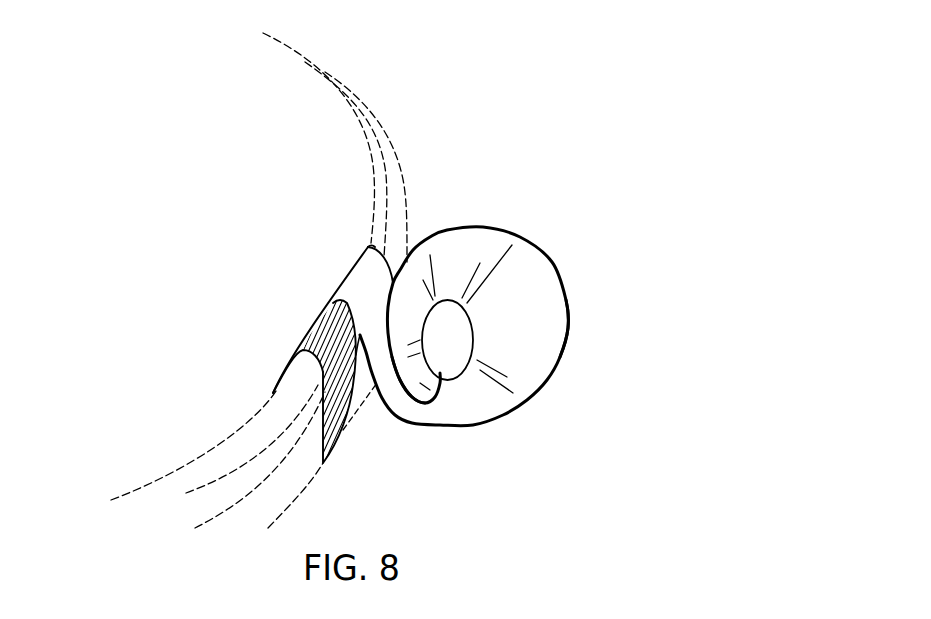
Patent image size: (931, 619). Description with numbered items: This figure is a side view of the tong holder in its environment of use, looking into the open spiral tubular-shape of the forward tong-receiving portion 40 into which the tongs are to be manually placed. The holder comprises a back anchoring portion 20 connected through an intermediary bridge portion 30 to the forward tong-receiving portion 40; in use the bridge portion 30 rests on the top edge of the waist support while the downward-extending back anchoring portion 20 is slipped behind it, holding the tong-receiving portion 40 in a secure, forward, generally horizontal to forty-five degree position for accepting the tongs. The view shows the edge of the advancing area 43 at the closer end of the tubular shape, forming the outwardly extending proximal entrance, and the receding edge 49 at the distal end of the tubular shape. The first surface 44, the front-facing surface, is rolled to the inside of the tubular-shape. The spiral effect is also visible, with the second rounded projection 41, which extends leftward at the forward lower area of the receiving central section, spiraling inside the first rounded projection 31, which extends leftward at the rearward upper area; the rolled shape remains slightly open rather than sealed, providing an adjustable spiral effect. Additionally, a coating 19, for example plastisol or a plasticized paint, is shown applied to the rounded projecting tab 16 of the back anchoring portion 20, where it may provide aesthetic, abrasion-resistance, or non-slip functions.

The projecting tab 16 is at (343, 433).
The coating 19 is at (352, 385).
The back anchoring portion 20 is at (310, 293).
The intermediary bridge portion 30 is at (393, 243).
The first rounded projection 31 is at (402, 405).
The forward tong-receiving portion 40 is at (527, 213).
The second rounded projection 41 is at (430, 390).
The edge of advancing area 43 is at (568, 328).
The first surface 44 is at (524, 338).
The receding edge 49 is at (470, 317).